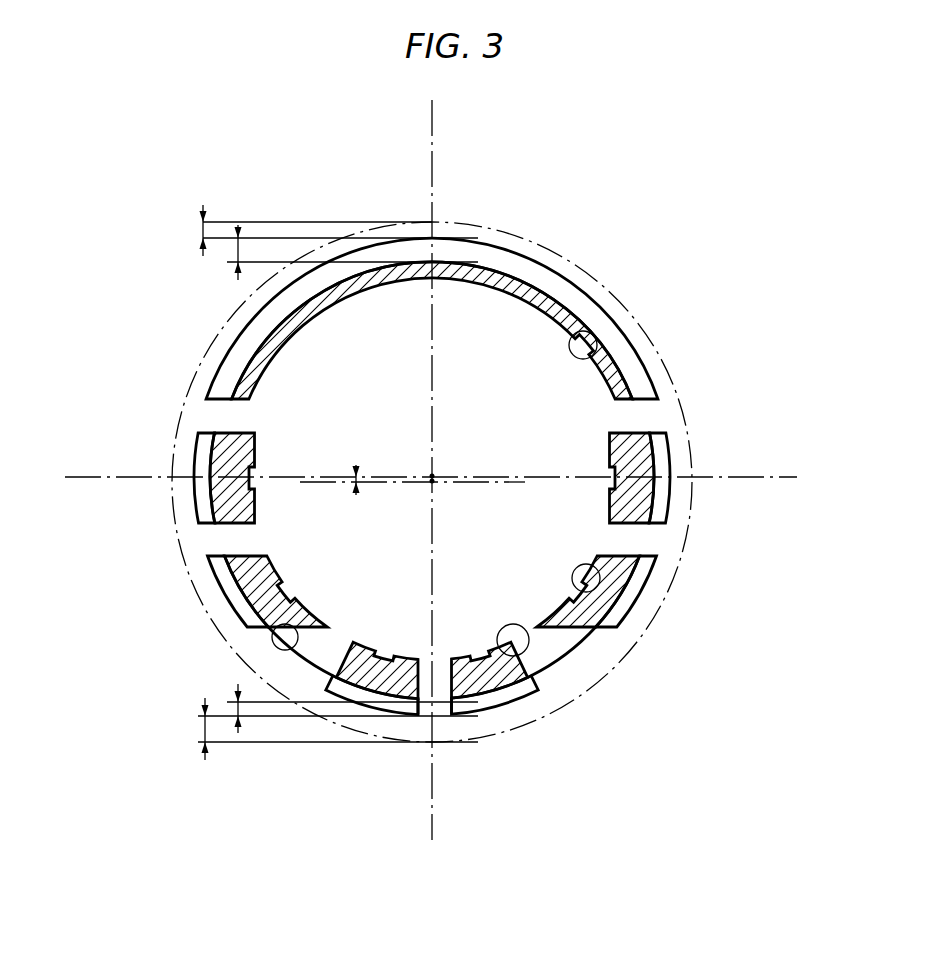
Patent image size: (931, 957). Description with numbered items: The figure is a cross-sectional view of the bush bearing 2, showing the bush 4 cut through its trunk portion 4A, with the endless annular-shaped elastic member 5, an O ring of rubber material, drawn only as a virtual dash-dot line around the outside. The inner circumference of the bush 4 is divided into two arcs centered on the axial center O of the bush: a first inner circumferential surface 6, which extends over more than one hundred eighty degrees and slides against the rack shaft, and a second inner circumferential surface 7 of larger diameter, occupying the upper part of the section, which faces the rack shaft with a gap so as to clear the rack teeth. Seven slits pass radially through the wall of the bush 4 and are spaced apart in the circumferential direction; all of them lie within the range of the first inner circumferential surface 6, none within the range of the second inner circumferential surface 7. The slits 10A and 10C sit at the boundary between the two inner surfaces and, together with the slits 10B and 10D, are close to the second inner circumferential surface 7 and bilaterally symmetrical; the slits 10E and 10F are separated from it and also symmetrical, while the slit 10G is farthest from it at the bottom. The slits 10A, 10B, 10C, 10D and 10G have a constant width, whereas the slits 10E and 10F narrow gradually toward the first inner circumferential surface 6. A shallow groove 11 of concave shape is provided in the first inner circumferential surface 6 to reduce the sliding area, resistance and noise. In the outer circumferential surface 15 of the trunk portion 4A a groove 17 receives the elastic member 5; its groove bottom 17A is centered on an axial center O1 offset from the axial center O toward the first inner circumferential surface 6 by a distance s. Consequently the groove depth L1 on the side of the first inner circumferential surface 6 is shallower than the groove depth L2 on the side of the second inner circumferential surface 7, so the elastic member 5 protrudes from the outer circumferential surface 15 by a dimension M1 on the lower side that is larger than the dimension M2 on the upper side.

The bush bearing 2 is at (470, 181).
The bush 4 is at (407, 291).
The trunk portion 4A is at (216, 350).
The endless annular-shaped elastic member 5 is at (172, 456).
The first inner circumferential surface 6 is at (520, 657).
The second inner circumferential surface 7 is at (596, 336).
The slit 10A is at (222, 410).
The slit 10B is at (215, 540).
The slit 10C is at (648, 412).
The slit 10D is at (649, 540).
The slit 10E is at (272, 640).
The slit 10F is at (568, 628).
The slit 10G is at (440, 684).
The shallow groove 11 is at (599, 585).
The outer circumferential surface 15 is at (656, 368).
The groove 17 is at (460, 291).
The groove bottom 17A is at (556, 290).
The axial center of the bush O is at (438, 474).
The axial center of the groove bottom O1 is at (438, 483).
The offset distance s is at (349, 484).
The groove depth L1 is at (226, 700).
The groove depth L2 is at (234, 250).
The protrusion dimension M1 is at (203, 728).
The protrusion dimension M2 is at (203, 232).